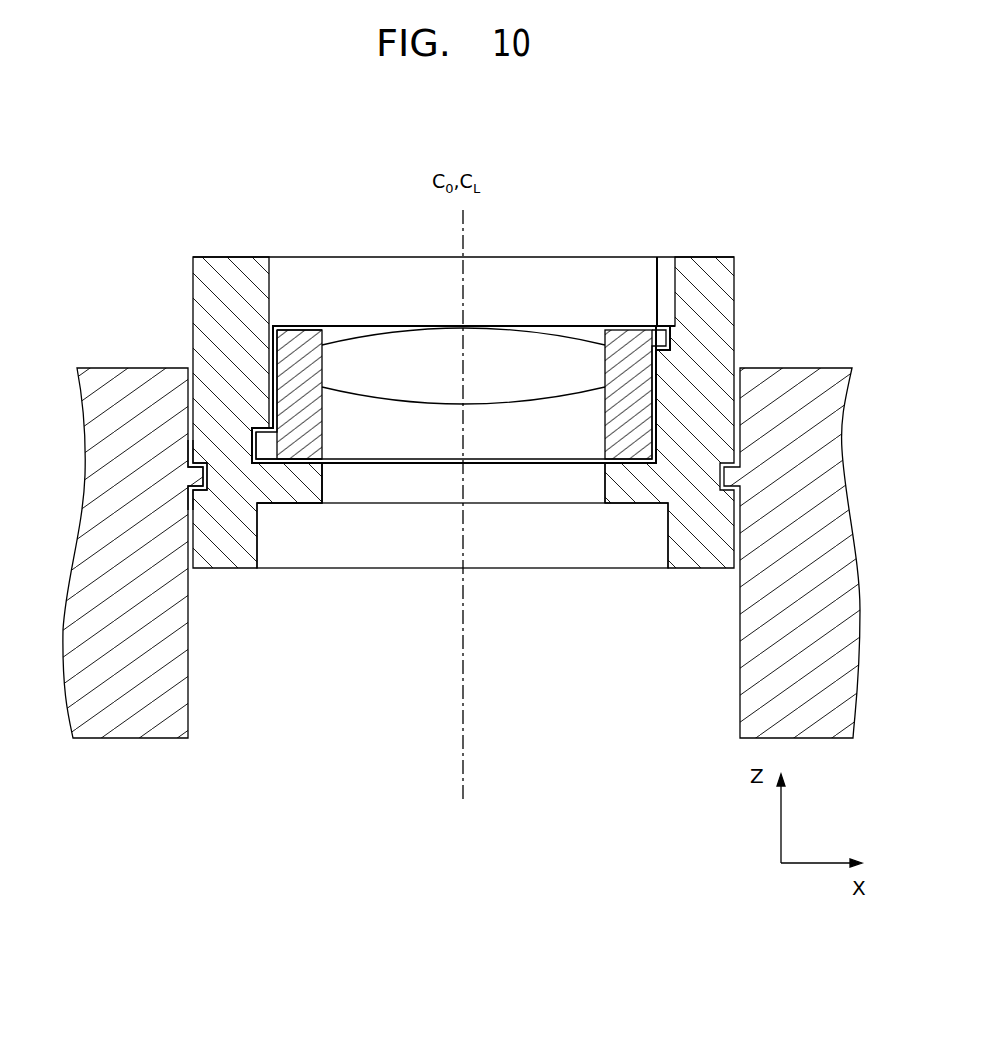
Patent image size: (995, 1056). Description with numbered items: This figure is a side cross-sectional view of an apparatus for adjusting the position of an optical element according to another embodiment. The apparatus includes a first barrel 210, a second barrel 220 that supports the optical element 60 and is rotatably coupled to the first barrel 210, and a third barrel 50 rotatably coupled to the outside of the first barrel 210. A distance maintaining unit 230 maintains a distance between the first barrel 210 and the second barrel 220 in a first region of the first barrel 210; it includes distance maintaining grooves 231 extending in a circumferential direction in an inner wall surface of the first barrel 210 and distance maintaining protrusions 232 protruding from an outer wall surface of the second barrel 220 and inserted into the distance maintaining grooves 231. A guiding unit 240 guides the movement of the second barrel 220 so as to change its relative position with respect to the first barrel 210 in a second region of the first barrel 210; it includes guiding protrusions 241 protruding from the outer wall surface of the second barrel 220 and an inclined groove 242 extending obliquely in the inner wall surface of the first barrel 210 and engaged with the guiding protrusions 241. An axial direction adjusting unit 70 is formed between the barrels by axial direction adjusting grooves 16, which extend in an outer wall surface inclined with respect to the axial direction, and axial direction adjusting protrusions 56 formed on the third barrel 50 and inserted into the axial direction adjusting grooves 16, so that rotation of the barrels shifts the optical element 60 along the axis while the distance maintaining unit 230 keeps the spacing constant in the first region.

The third barrel 50 is at (127, 760).
The axial direction adjusting protrusions 56 is at (190, 465).
The axial direction adjusting grooves 16 is at (213, 485).
The axial direction adjusting unit 70 is at (161, 381).
The first barrel 210 is at (223, 586).
The second barrel 220 is at (307, 310).
The distance maintaining unit 230 is at (446, 502).
The distance maintaining grooves 231 is at (241, 444).
The distance maintaining protrusions 232 is at (270, 445).
The guiding unit 240 is at (673, 249).
The guiding protrusions 241 is at (656, 342).
The inclined groove 242 is at (668, 300).
The optical element 60 is at (528, 345).